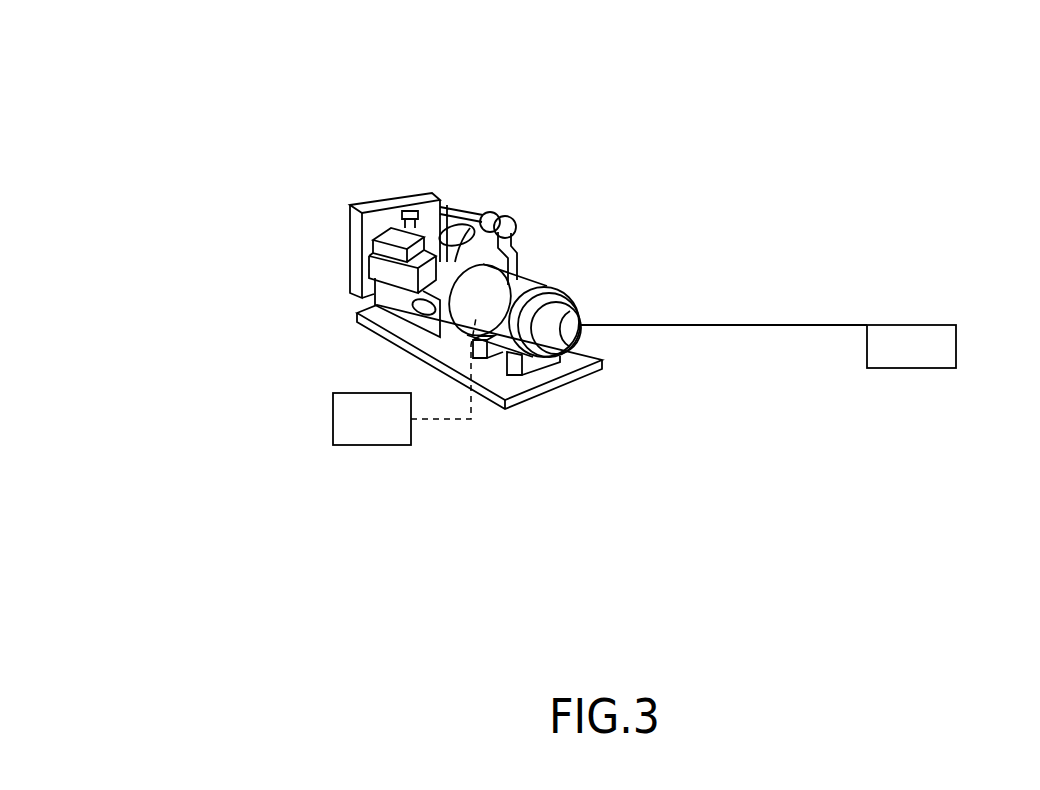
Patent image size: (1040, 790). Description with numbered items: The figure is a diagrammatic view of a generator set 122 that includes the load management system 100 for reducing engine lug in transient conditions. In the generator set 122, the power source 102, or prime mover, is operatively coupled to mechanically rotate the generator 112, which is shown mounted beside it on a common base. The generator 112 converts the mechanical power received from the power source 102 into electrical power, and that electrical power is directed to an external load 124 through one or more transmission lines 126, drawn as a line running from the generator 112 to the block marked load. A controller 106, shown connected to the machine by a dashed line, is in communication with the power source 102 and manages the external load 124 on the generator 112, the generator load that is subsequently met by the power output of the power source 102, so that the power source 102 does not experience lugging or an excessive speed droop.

The load management system 100 is at (328, 367).
The power source 102 is at (516, 226).
The controller 106 is at (392, 425).
The generator 112 is at (553, 330).
The generator set 122 is at (862, 171).
The external load 124 is at (910, 368).
The transmission lines 126 is at (684, 325).